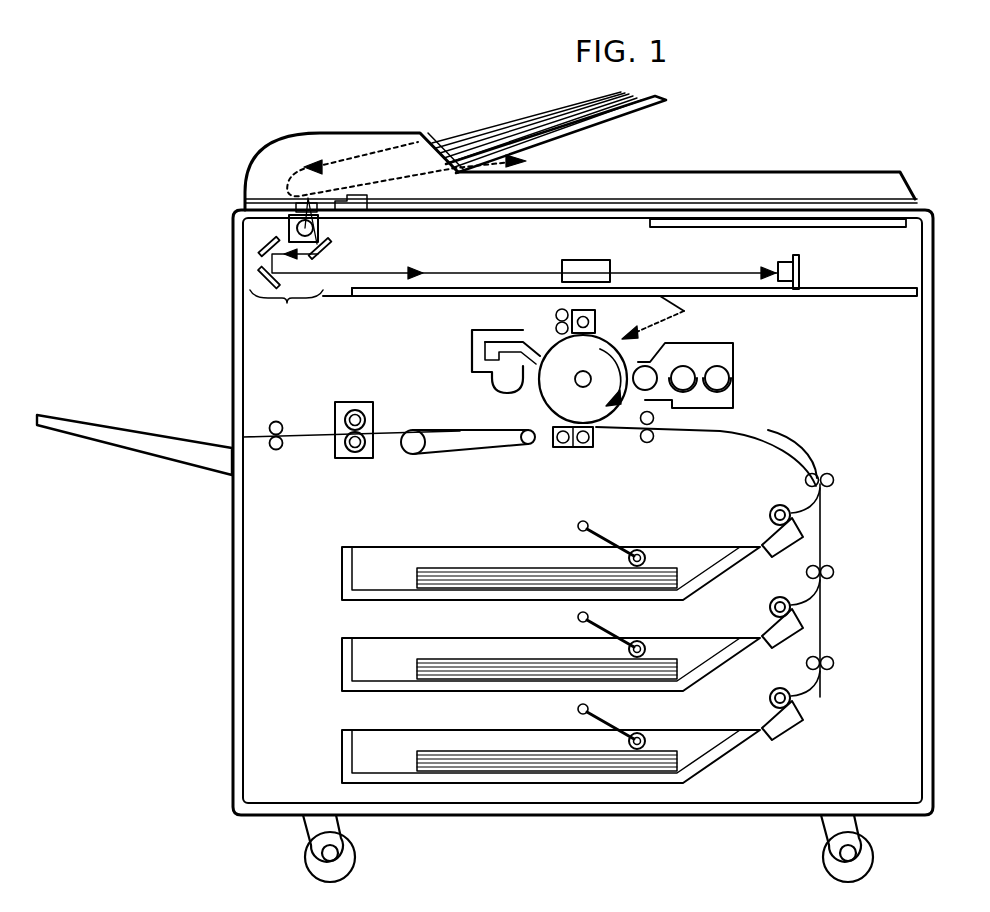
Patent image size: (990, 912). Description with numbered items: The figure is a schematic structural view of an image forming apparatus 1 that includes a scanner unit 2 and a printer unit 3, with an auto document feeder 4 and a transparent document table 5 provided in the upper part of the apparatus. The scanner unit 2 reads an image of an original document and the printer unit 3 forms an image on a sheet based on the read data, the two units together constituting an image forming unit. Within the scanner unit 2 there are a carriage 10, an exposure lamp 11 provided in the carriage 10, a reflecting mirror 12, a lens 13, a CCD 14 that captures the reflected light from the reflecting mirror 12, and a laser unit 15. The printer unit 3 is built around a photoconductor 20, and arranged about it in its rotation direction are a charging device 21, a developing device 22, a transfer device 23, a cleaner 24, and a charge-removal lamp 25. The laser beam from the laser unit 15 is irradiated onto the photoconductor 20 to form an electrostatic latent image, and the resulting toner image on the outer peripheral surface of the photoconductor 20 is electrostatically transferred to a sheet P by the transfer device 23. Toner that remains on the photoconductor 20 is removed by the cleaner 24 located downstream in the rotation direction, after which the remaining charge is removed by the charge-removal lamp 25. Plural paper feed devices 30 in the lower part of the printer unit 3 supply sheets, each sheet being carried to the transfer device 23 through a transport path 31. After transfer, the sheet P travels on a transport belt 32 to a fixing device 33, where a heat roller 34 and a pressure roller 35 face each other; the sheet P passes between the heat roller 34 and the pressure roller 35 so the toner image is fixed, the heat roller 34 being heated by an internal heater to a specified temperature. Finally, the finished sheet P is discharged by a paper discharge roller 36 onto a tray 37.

The image forming apparatus 1 is at (849, 136).
The scanner unit 2 is at (903, 256).
The printer unit 3 is at (902, 406).
The auto document feeder (ADF) 4 is at (286, 144).
The transparent document table 5 is at (636, 204).
The carriage 10 is at (289, 229).
The exposure lamp 11 is at (318, 223).
The reflecting mirror 12 is at (514, 285).
The lens 13 is at (568, 260).
The CCD 14 is at (801, 267).
The laser unit 15 is at (798, 296).
The photoconductor 20 is at (540, 404).
The charging device 21 is at (628, 323).
The developing device 22 is at (735, 364).
The transfer device 23 is at (584, 448).
The cleaner 24 is at (472, 354).
The charge-removal lamp 25 is at (556, 321).
The paper feed device 30 is at (533, 546).
The transport path 31 is at (762, 444).
The transport belt 32 is at (468, 449).
The fixing device 33 is at (348, 422).
The heat roller 34 is at (346, 417).
The pressure roller 35 is at (363, 448).
The paper discharge roller 36 is at (277, 450).
The tray 37 is at (125, 430).
The sheet P is at (718, 428).